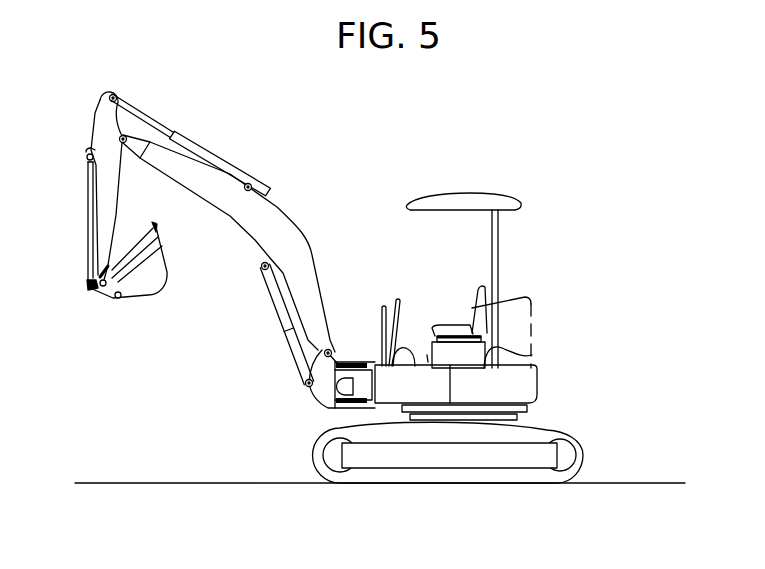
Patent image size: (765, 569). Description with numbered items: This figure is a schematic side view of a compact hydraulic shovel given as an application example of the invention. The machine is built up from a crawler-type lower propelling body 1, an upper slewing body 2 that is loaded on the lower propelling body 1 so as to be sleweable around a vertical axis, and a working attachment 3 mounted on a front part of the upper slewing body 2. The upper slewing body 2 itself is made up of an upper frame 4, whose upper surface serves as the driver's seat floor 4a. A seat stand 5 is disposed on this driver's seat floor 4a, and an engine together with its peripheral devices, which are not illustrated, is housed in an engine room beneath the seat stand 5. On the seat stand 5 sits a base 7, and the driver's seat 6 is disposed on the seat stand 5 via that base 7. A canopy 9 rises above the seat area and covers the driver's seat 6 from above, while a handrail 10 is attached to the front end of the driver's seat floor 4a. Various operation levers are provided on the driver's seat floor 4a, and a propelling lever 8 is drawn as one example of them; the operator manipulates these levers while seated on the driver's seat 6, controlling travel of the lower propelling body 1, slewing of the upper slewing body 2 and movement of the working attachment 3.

The lower propelling body 1 is at (447, 493).
The upper slewing body 2 is at (546, 297).
The working attachment 3 is at (286, 196).
The upper frame 4 is at (541, 386).
The driver's seat floor 4a is at (396, 351).
The seat stand 5 is at (532, 355).
The driver's seat 6 is at (474, 306).
The base 7 is at (465, 332).
The propelling lever 8 is at (398, 297).
The canopy 9 is at (513, 196).
The handrail 10 is at (381, 314).